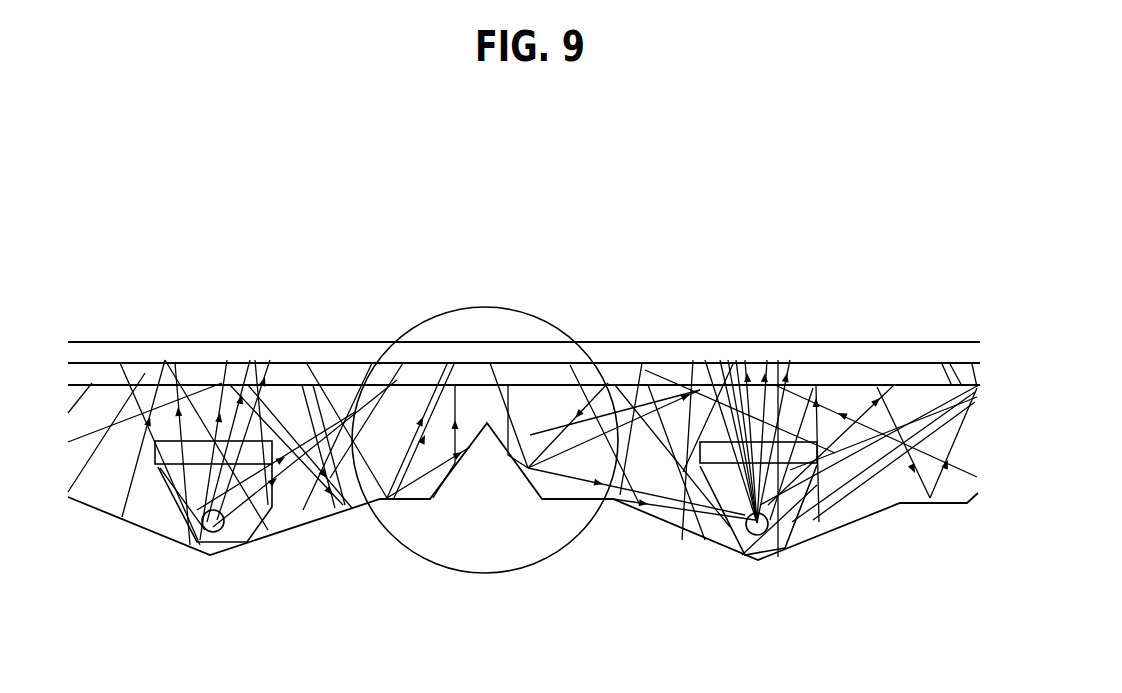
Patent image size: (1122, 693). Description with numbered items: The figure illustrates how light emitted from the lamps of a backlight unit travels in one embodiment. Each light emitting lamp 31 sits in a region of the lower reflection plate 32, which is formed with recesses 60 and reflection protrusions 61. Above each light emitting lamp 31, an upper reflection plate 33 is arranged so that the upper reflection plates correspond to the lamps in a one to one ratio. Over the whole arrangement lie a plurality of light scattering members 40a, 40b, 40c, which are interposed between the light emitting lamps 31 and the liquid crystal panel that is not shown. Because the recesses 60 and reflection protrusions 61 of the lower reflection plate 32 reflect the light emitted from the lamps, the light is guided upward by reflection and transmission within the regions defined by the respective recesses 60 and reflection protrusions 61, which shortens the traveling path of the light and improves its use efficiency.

The light scattering member 40a is at (283, 385).
The light scattering member 40b is at (157, 363).
The light scattering member 40c is at (94, 342).
The recess 60 is at (152, 546).
The reflection protrusion 61 is at (487, 494).
The upper reflection plate 33 is at (157, 466).
The lower reflection plate 32 is at (178, 547).
The light emitting lamp 31 is at (230, 545).